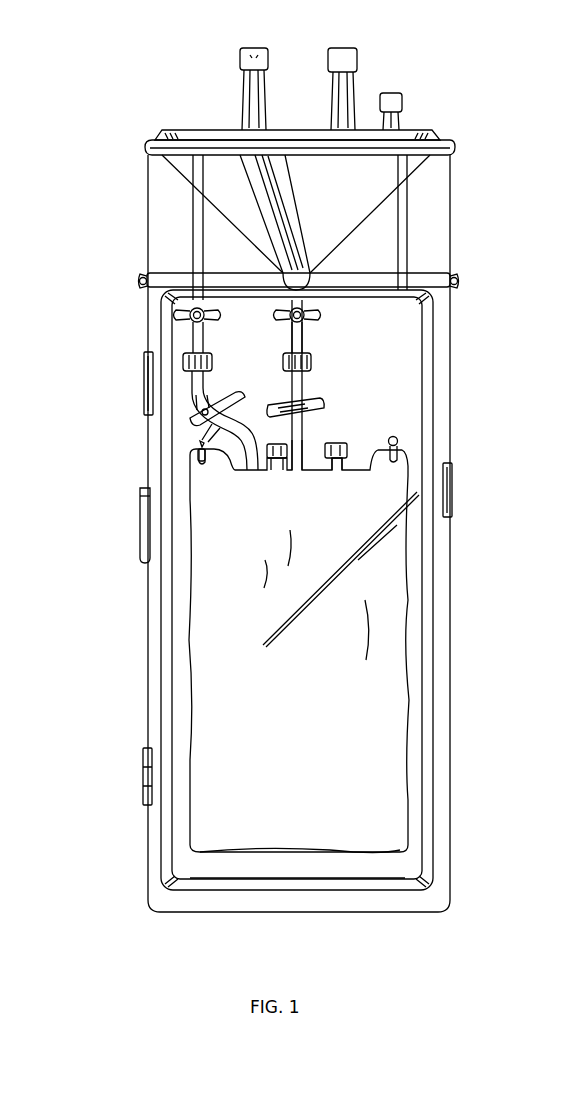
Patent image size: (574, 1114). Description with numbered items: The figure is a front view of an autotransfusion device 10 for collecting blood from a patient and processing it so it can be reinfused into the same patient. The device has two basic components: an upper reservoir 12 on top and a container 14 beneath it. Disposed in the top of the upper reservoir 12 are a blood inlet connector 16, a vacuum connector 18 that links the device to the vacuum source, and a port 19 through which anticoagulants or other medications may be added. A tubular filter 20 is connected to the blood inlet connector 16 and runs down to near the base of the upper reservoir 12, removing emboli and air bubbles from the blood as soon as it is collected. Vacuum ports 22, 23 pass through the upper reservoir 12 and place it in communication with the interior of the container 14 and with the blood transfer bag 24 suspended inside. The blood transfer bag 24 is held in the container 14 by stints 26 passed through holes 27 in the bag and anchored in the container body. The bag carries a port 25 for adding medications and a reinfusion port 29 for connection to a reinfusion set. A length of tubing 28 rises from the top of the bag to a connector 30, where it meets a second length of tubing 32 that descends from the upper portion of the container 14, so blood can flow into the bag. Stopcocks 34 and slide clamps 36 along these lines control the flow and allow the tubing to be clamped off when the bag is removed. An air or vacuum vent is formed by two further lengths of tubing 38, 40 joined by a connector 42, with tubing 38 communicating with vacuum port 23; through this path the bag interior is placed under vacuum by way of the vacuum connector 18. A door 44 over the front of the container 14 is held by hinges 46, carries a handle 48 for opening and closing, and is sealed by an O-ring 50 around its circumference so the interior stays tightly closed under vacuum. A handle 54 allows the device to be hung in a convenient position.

The autotransfusion device 10 is at (116, 680).
The upper reservoir 12 is at (452, 240).
The container 14 is at (451, 673).
The blood inlet connector 16 is at (250, 55).
The vacuum connector 18 is at (343, 58).
The port 19 is at (393, 100).
The tubular filter 20 is at (272, 187).
The vacuum port 22 is at (405, 208).
The vacuum port 23 is at (194, 223).
The blood transfer bag 24 is at (190, 629).
The port 25 is at (347, 443).
The stints 26 is at (199, 442).
The holes 27 is at (197, 458).
The tubing 28 is at (304, 438).
The reinfusion port 29 is at (275, 459).
The connector 30 is at (311, 359).
The tubing 32 is at (303, 345).
The stopcocks 34 is at (205, 313).
The slide clamps 36 is at (232, 397).
The tubing 38 is at (203, 345).
The tubing 40 is at (248, 407).
The connector 42 is at (186, 352).
The door 44 is at (218, 862).
The hinges 46 is at (148, 379).
The handle 48 is at (453, 492).
The O-ring 50 is at (161, 881).
The handle 54 is at (103, 525).